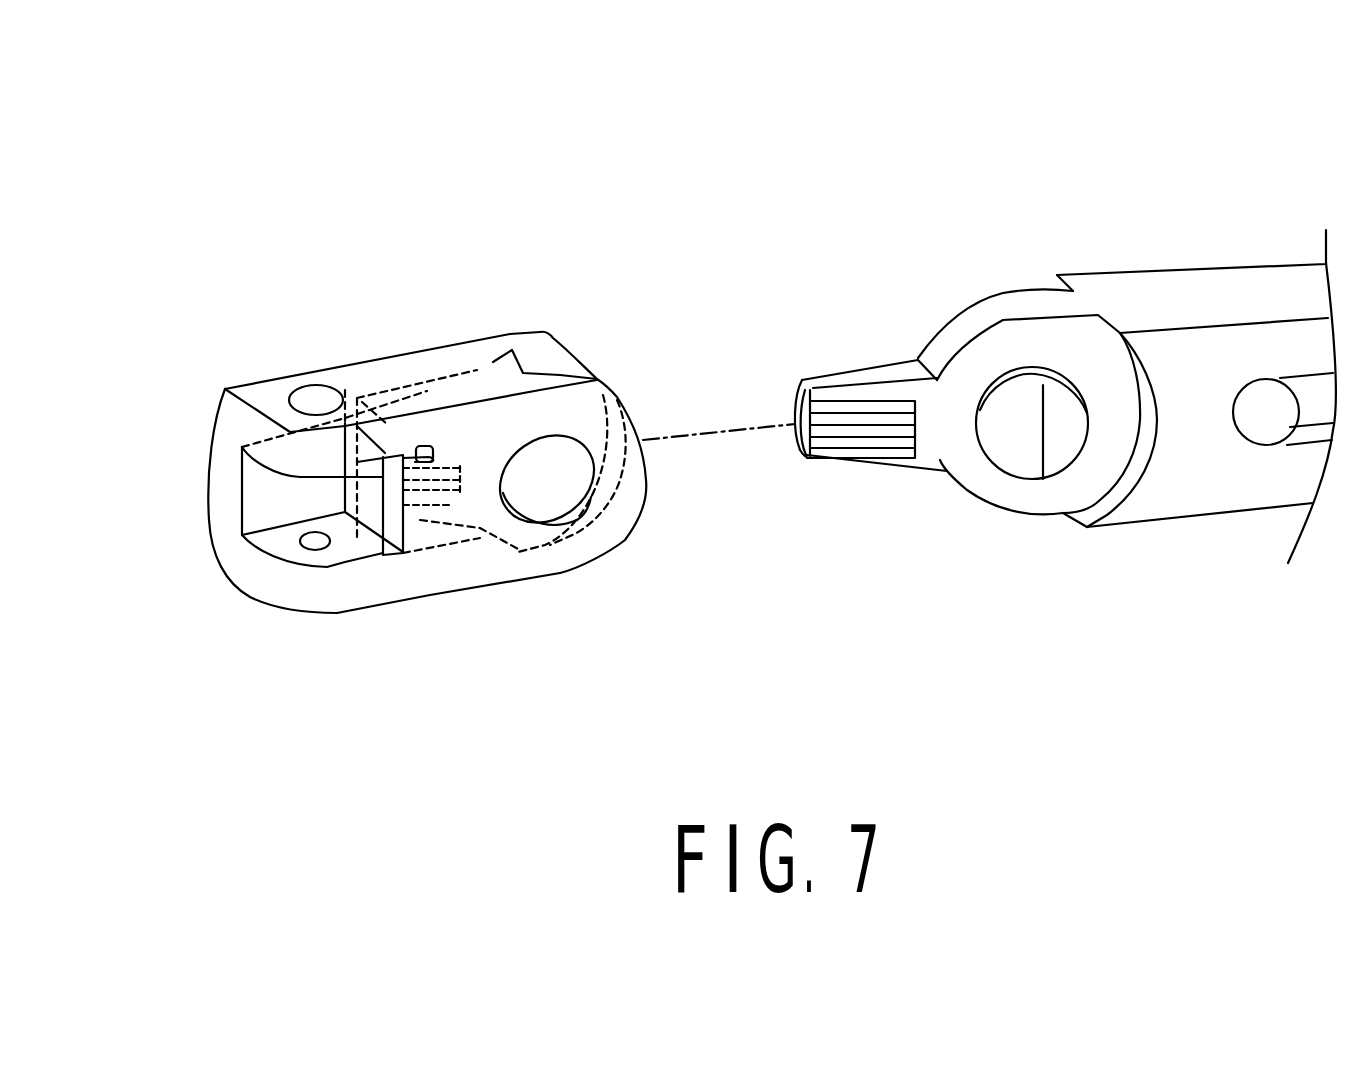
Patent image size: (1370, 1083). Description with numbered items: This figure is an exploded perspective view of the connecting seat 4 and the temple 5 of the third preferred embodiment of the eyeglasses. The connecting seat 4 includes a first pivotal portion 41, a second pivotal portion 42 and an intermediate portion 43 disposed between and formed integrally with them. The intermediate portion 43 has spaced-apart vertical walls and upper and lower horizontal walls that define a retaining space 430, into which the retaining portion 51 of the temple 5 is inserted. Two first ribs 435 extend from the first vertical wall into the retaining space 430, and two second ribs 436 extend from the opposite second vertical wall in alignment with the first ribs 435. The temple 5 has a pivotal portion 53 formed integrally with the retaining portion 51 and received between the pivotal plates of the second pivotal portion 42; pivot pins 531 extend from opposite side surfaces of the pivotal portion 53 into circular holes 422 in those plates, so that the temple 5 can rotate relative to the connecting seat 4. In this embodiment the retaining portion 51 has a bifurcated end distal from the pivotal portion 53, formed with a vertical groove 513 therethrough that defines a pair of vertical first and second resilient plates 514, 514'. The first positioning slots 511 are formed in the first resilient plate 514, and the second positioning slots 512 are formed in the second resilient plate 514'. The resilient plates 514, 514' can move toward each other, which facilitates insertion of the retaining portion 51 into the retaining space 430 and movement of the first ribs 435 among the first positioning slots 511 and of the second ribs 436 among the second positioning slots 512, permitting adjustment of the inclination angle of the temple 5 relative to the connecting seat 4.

The connecting seat 4 is at (240, 325).
The first pivotal portion 41 is at (265, 573).
The second pivotal portion 42 is at (612, 530).
The circular hole 422 is at (553, 453).
The intermediate portion 43 is at (443, 573).
The retaining space 430 is at (372, 503).
The first ribs 435 is at (437, 493).
The second ribs 436 is at (423, 447).
The temple 5 is at (1218, 190).
The retaining portion 51 is at (920, 460).
The first positioning slots 511 is at (837, 450).
The second positioning slots 512 is at (797, 390).
The vertical groove 513 is at (797, 407).
The first resilient plate 514 is at (871, 322).
The second resilient plate 514' is at (856, 301).
The pivotal portion 53 is at (992, 310).
The pivot pins 531 is at (1028, 467).